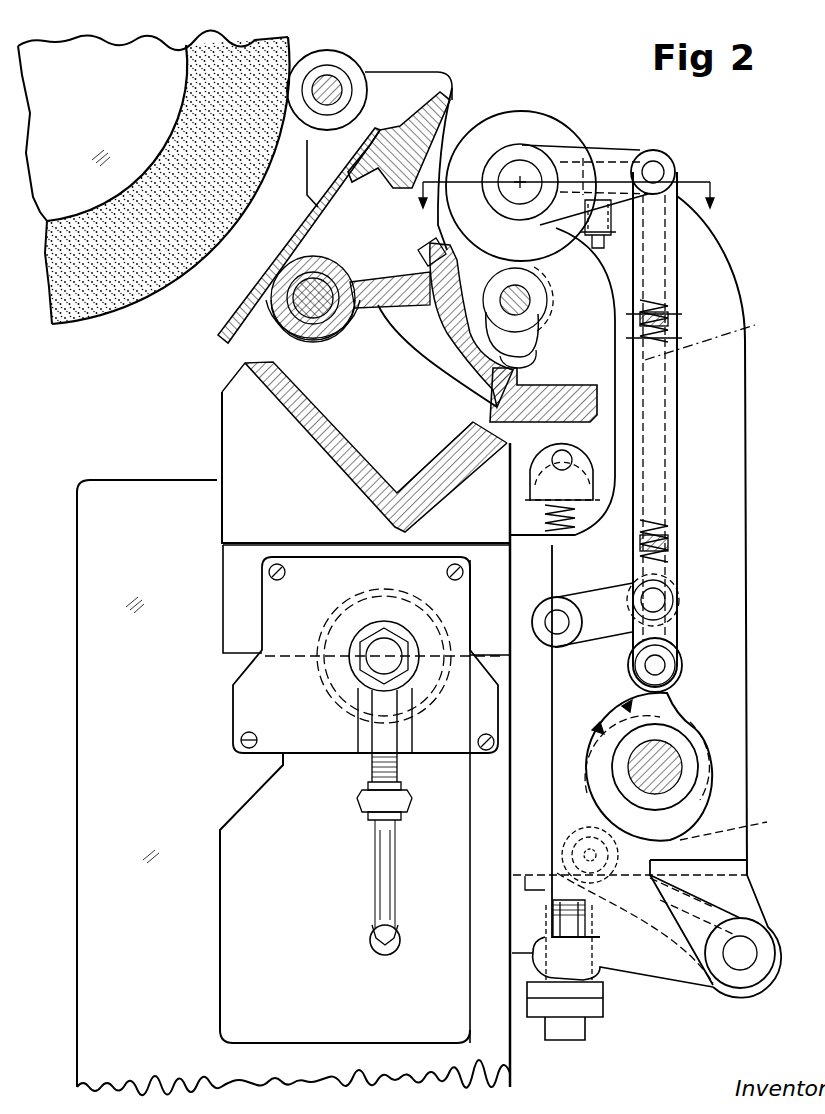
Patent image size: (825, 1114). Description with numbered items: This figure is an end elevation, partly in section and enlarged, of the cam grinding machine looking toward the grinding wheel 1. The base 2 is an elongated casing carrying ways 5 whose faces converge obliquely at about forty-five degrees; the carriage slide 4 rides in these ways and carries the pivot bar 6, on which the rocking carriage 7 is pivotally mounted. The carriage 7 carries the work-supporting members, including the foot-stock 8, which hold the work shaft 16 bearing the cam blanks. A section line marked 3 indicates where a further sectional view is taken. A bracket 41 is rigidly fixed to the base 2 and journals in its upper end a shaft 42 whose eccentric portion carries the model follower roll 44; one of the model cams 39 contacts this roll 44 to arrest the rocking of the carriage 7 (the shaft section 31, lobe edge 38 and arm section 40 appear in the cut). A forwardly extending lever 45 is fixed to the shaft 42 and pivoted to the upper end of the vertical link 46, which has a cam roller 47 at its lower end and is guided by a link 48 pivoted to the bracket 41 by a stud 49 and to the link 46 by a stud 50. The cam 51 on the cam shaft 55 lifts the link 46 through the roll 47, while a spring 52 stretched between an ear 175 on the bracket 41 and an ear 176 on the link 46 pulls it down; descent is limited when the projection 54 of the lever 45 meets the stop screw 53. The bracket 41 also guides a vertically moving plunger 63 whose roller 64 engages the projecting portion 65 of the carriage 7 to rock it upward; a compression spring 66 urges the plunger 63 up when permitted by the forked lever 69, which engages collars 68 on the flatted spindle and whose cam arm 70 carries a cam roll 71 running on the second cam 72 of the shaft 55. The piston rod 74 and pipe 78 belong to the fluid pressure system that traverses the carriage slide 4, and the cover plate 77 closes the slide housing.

The grinding wheel 1 is at (128, 305).
The base 2 is at (162, 493).
The section line 3- 3 is at (564, 207).
The carriage slide 4 is at (330, 462).
The ways 5 is at (462, 480).
The pivot bar 6 is at (300, 297).
The carriage 7 is at (432, 142).
The foot-stock 8 is at (345, 66).
The work shaft 16 is at (318, 105).
The shaft 31 is at (525, 297).
The cam lobe edge 38 is at (520, 358).
The model cam 39 is at (527, 336).
The work support arm 40 is at (345, 102).
The bracket 41 is at (738, 474).
The shaft 42 is at (528, 178).
The model follower roll 44 is at (528, 133).
The lever 45 is at (600, 150).
The link 46 is at (660, 282).
The cam roller 47 is at (680, 665).
The link 48 is at (598, 604).
The stud 49 is at (559, 616).
The stud 50 is at (665, 598).
The cam 51 is at (690, 705).
The spring 52 is at (711, 338).
The stop screw 53 is at (590, 247).
The projection 54 is at (650, 137).
The cam shaft 55 is at (680, 760).
The plunger 63 is at (566, 1032).
The roller 64 is at (574, 440).
The projecting portion 65 is at (588, 392).
The compression spring 66 is at (545, 520).
The collars 68 is at (598, 1010).
The forked lever 69 is at (685, 965).
The cam arm 70 is at (745, 895).
The cam roll 71 is at (578, 835).
The second cam 72 is at (737, 825).
The piston rod 74 is at (380, 658).
The cover plate 77 is at (241, 740).
The pipe 78 is at (400, 850).
The ear 175 is at (672, 327).
The ear 176 is at (672, 543).